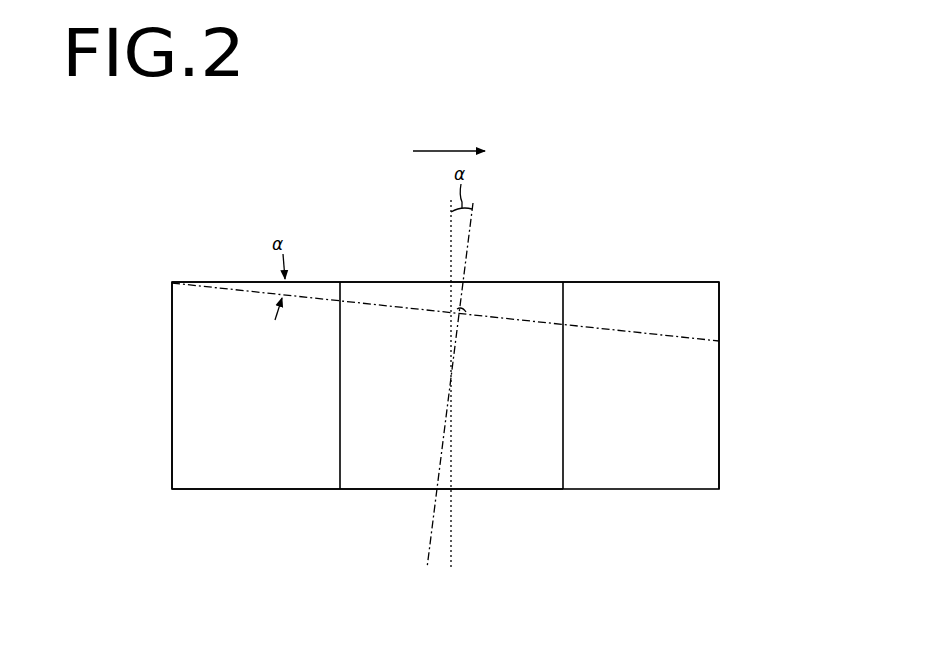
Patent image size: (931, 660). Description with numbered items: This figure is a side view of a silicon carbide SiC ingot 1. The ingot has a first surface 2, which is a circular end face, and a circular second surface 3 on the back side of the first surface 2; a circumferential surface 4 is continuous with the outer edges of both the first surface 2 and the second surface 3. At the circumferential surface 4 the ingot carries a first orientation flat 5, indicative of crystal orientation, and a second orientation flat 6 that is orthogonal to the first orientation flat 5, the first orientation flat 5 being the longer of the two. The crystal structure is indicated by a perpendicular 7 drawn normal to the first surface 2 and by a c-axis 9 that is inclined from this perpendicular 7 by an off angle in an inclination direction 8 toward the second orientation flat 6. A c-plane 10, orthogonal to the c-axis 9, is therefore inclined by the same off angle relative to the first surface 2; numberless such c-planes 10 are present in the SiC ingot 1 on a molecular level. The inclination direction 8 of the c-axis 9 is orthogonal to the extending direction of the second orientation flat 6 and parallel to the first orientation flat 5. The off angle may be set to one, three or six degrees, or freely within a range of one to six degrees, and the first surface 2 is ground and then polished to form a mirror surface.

The SiC ingot 1 is at (170, 316).
The first surface 2 is at (663, 282).
The second surface 3 is at (203, 489).
The circumferential surface 4 is at (182, 374).
The first orientation flat 5 is at (516, 489).
The second orientation flat 6 is at (719, 430).
The perpendicular 7 is at (451, 231).
The inclination direction 8 is at (452, 151).
The c-axis 9 is at (472, 227).
The c-plane 10 is at (680, 337).